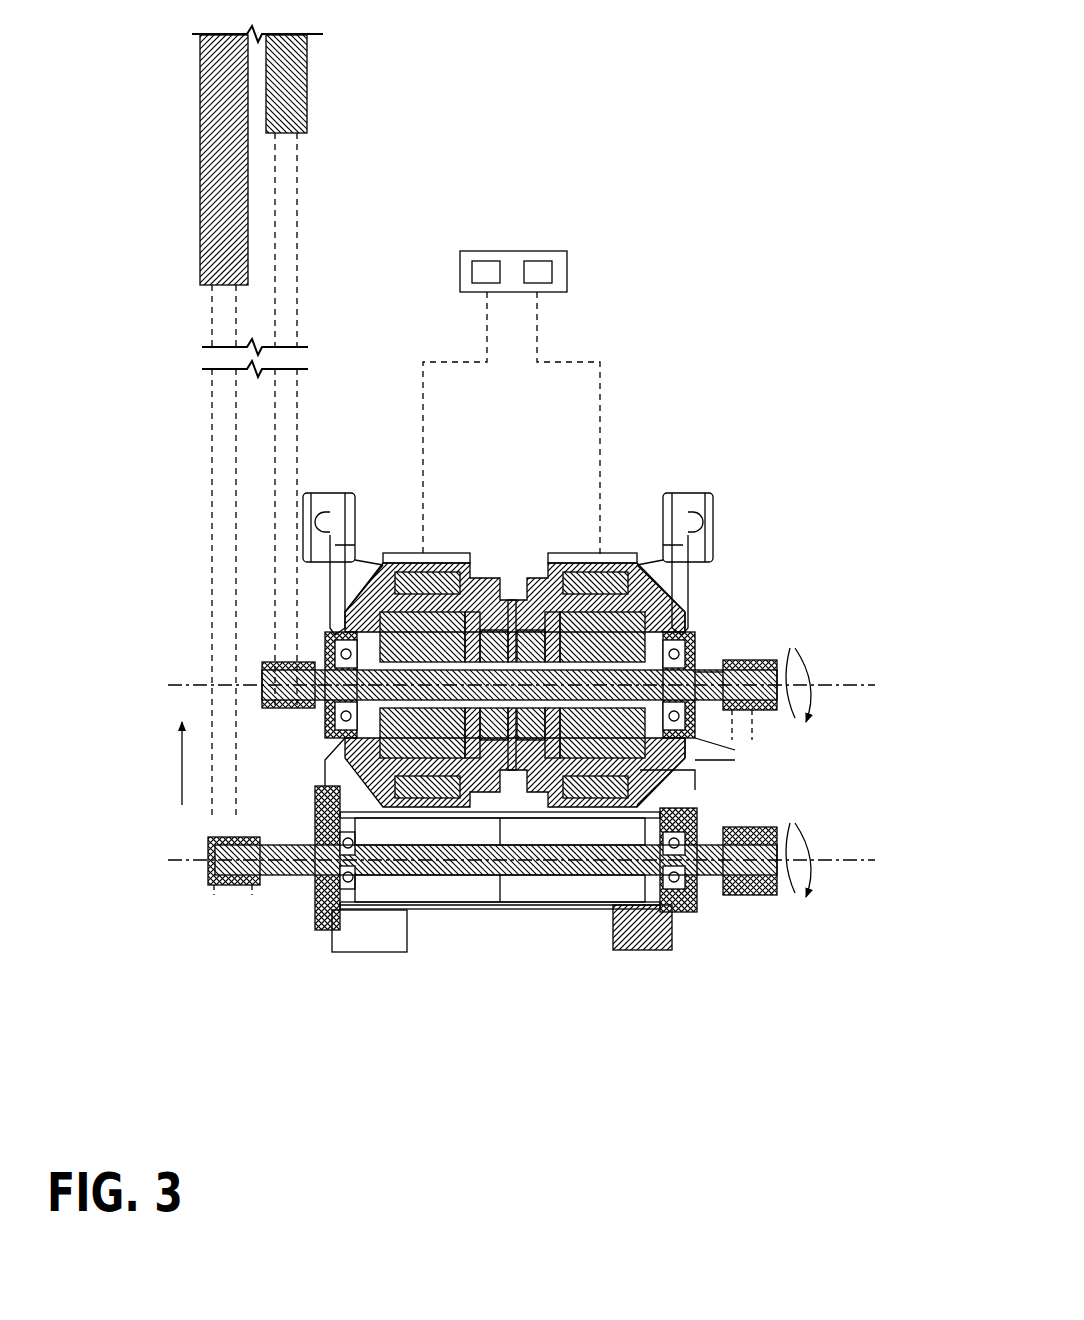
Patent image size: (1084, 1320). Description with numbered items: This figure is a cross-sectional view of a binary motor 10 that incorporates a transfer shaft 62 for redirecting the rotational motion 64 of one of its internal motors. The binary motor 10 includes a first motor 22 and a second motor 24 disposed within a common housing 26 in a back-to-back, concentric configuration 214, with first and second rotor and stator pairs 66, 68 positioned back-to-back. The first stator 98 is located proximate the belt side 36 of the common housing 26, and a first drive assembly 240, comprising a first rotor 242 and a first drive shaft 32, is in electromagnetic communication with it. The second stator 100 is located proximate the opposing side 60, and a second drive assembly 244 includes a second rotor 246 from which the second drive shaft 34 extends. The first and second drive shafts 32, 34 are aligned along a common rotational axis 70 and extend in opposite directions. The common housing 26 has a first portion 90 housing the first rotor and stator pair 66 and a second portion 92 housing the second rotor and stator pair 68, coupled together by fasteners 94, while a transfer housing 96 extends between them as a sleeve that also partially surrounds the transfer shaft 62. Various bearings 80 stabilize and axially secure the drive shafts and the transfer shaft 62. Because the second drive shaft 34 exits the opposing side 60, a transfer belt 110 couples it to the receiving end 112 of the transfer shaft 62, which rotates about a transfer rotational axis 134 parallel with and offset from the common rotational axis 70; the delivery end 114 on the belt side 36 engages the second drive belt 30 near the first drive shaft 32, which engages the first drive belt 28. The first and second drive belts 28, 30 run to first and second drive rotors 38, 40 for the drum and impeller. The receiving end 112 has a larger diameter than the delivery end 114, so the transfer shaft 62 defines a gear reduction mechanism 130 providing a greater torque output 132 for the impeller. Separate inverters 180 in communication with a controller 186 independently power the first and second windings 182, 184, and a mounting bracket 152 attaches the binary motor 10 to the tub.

The binary motor 10 is at (640, 395).
The first motor 22 is at (378, 556).
The second motor 24 is at (592, 572).
The common housing 26 is at (722, 485).
The first drive belt 28 is at (210, 408).
The second drive belt 30 is at (296, 410).
The first drive shaft 32 is at (262, 680).
The second drive shaft 34 is at (697, 672).
The belt side 36 is at (312, 920).
The first drive rotor 38 is at (210, 128).
The second drive rotor 40 is at (290, 92).
The opposing side 60 is at (712, 608).
The transfer shaft 62 is at (550, 912).
The rotational motion 64 is at (818, 655).
The first rotor and stator pair 66 is at (455, 572).
The second rotor and stator pair 68 is at (672, 558).
The common rotational axis 70 is at (855, 685).
The bearings 80 is at (510, 600).
The first portion 90 is at (372, 958).
The second portion 92 is at (726, 596).
The fasteners 94 is at (505, 912).
The transfer housing 96 is at (435, 912).
The first stator 98 is at (385, 560).
The second stator 100 is at (540, 600).
The transfer belt 110 is at (740, 745).
The receiving end 112 is at (752, 897).
The delivery end 114 is at (210, 845).
The gear reduction mechanism 130 is at (198, 887).
The torque output 132 is at (182, 768).
The transfer rotational axis 134 is at (832, 858).
The mounting bracket 152 is at (700, 555).
The inverters 180 is at (540, 262).
The first winding 182 is at (342, 810).
The second winding 184 is at (692, 778).
The controller 186 is at (572, 265).
The concentric configuration 214 is at (200, 645).
The first drive assembly 240 is at (340, 630).
The first rotor 242 is at (262, 698).
The second drive assembly 244 is at (702, 618).
The second rotor 246 is at (778, 695).